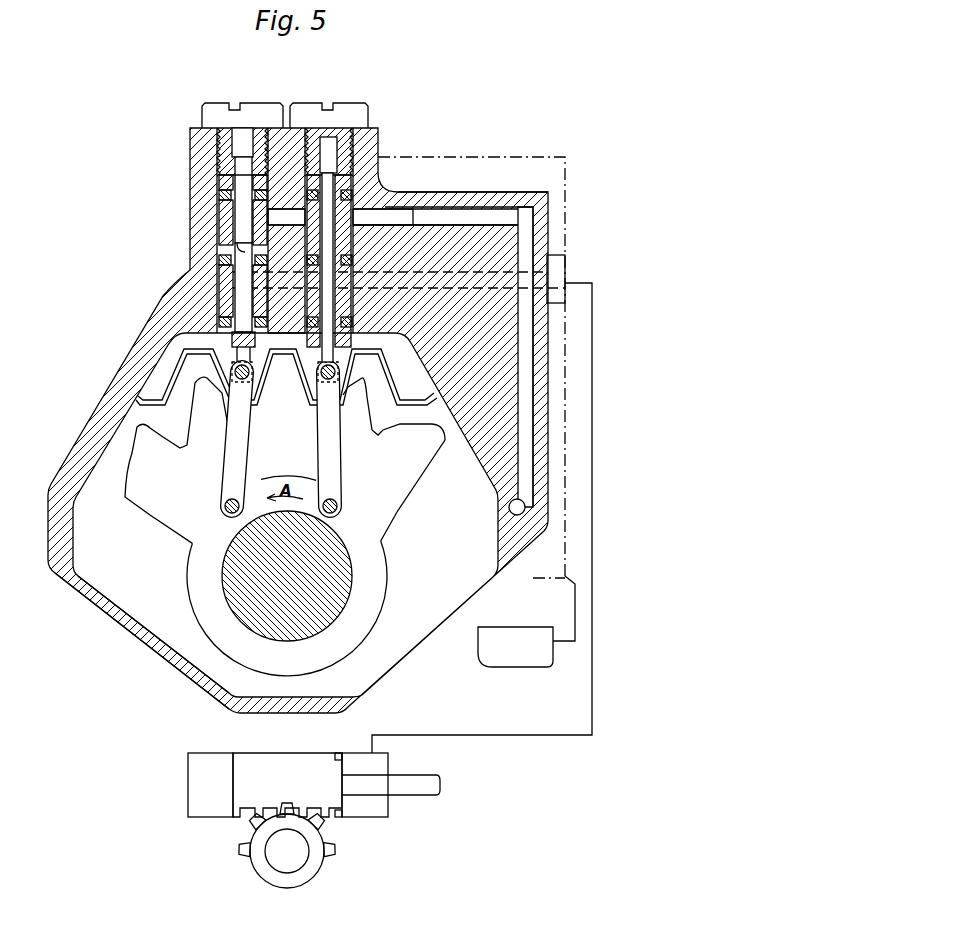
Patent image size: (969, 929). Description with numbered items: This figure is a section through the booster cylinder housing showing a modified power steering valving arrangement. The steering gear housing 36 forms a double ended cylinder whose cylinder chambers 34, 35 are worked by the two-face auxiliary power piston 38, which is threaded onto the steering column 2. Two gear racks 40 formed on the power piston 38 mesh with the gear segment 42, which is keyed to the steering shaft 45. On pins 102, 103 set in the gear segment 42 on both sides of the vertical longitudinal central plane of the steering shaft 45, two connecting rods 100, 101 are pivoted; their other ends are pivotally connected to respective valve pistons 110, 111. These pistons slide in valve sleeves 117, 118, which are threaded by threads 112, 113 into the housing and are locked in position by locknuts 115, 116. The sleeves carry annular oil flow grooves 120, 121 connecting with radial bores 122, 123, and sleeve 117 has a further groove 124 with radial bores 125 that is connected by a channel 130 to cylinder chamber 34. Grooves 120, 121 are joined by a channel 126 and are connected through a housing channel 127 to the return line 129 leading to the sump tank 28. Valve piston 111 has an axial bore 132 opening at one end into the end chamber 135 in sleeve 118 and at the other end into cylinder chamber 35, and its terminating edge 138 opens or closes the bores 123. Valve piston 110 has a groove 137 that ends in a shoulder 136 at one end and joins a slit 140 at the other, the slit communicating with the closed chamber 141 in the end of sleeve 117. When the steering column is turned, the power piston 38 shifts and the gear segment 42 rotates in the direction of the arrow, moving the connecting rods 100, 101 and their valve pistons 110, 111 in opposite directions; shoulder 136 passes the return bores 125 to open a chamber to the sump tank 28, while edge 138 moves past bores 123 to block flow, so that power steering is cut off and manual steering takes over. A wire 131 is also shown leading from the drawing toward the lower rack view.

The steering column 2 is at (417, 790).
The sump tank 28 is at (492, 660).
The cylinder chamber 34 is at (363, 810).
The cylinder chamber 35 is at (180, 640).
The steering gear housing 36 is at (128, 633).
The auxiliary power piston 38 is at (286, 377).
The gear racks 40 is at (414, 368).
The gear segment 42 is at (155, 475).
The steering shaft 45 is at (345, 578).
The connecting rod 100 is at (236, 458).
The connecting rod 101 is at (340, 458).
The pin 102 is at (228, 518).
The pin 103 is at (340, 520).
The valve piston 110 is at (240, 185).
The valve piston 111 is at (356, 336).
The threads 112 is at (215, 133).
The threads 113 is at (378, 132).
The locknut 115 is at (272, 118).
The locknut 116 is at (306, 118).
The valve sleeve 117 is at (218, 152).
The valve sleeve 118 is at (343, 185).
The annular oil flow groove 120 is at (225, 235).
The annular oil flow groove 121 is at (400, 196).
The radial bores 122 is at (222, 222).
The radial bores 123 is at (356, 217).
The groove 124 is at (230, 300).
The radial bores 125 is at (225, 282).
The channel 126 is at (305, 217).
The housing channel 127 is at (488, 216).
The return line 129 is at (575, 586).
The channel 130 is at (497, 281).
The control line 131 is at (510, 738).
The axial bore 132 is at (405, 227).
The end chamber 135 is at (330, 150).
The shoulder 136 is at (222, 260).
The groove 137 is at (228, 172).
The terminating edge 138 is at (352, 170).
The slit 140 is at (245, 165).
The closed chamber 141 is at (233, 148).